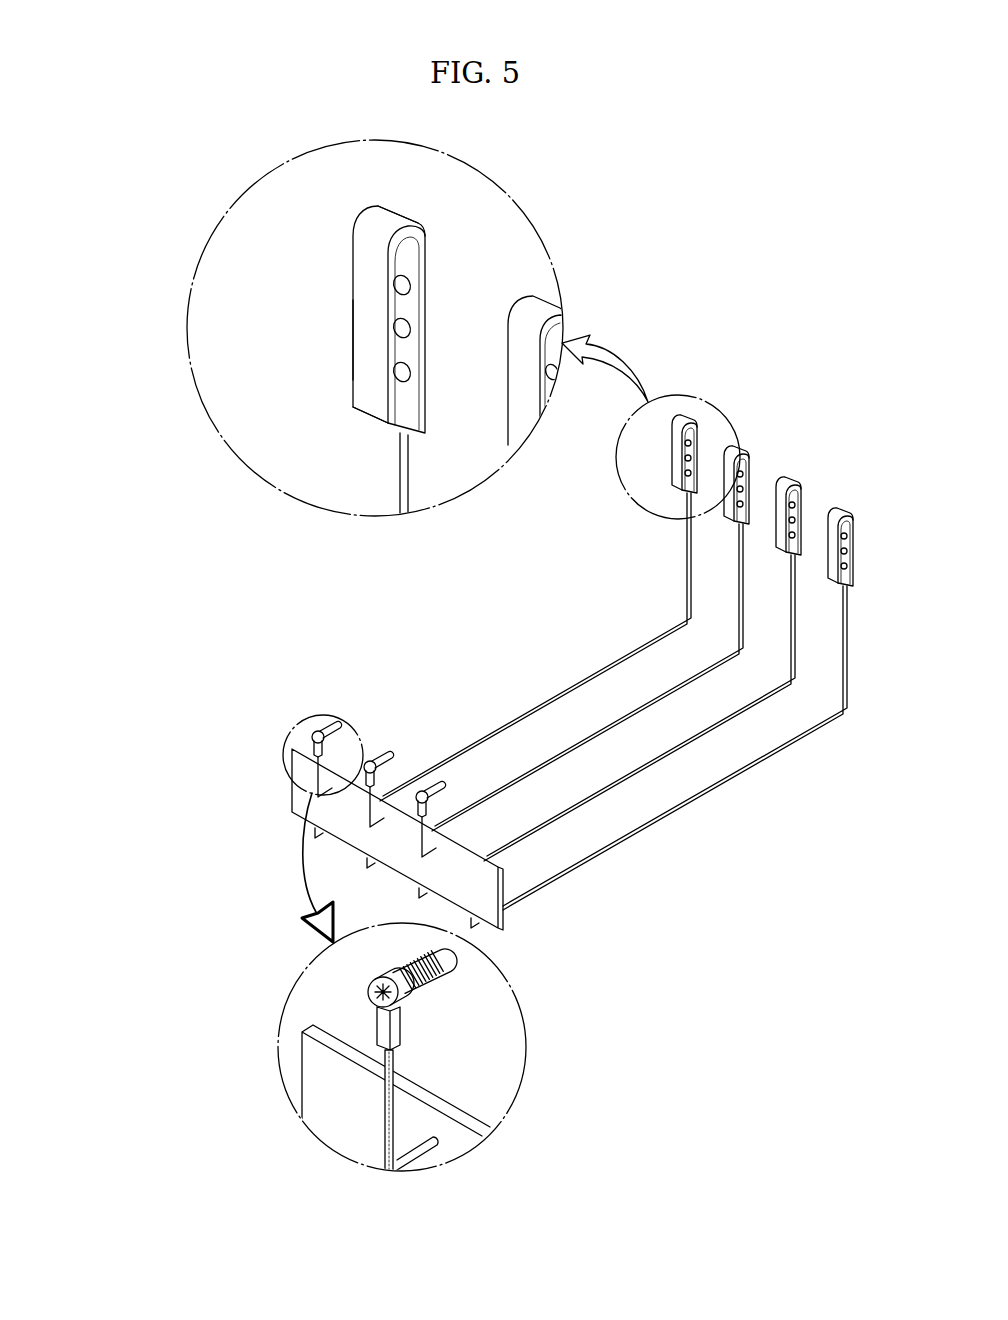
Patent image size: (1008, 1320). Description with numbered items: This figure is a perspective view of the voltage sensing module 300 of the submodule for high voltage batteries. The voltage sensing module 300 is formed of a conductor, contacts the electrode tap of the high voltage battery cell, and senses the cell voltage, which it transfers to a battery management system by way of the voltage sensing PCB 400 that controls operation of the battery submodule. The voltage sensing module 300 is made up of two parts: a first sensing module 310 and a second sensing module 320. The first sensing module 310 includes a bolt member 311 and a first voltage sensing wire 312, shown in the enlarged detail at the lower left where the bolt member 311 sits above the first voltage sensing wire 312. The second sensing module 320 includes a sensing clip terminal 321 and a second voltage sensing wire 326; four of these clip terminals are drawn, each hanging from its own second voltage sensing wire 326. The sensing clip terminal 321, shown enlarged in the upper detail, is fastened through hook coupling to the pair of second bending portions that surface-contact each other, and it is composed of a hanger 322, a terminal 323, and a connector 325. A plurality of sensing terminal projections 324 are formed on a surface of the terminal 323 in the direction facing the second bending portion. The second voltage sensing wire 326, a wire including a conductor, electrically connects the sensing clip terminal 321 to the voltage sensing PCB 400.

The voltage sensing module 300 is at (458, 681).
The first sensing module 310 is at (495, 948).
The bolt member 311 is at (445, 950).
The first voltage sensing wire 312 is at (388, 1118).
The second sensing module 320 is at (458, 558).
The sensing clip terminal 321 is at (458, 493).
The hanger 322 is at (362, 340).
The terminal 323 is at (405, 405).
The sensing terminal projections 324 is at (398, 283).
The connector 325 is at (390, 222).
The second voltage sensing wire 326 is at (402, 482).
The voltage sensing PCB 400 is at (300, 792).